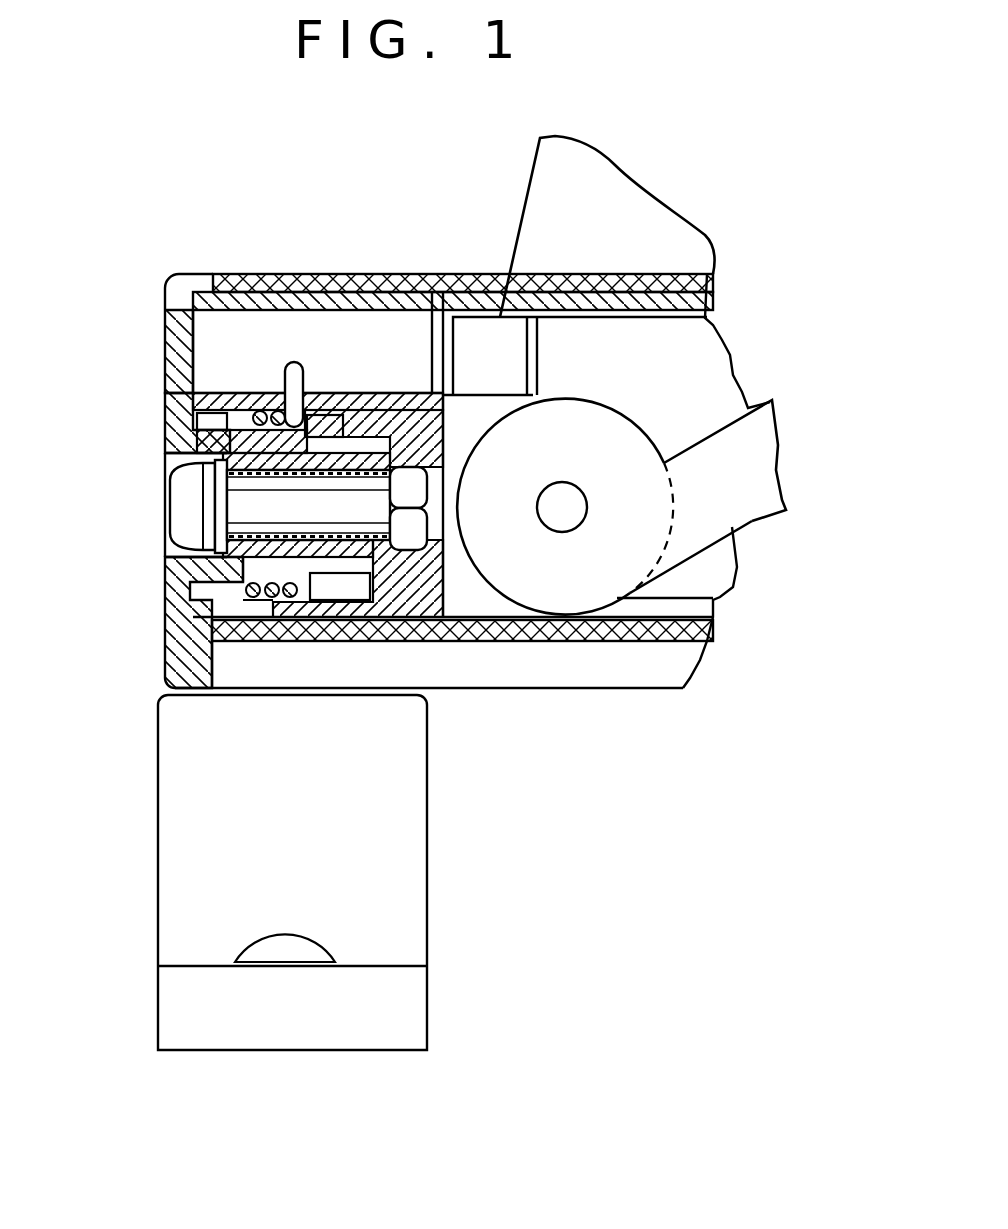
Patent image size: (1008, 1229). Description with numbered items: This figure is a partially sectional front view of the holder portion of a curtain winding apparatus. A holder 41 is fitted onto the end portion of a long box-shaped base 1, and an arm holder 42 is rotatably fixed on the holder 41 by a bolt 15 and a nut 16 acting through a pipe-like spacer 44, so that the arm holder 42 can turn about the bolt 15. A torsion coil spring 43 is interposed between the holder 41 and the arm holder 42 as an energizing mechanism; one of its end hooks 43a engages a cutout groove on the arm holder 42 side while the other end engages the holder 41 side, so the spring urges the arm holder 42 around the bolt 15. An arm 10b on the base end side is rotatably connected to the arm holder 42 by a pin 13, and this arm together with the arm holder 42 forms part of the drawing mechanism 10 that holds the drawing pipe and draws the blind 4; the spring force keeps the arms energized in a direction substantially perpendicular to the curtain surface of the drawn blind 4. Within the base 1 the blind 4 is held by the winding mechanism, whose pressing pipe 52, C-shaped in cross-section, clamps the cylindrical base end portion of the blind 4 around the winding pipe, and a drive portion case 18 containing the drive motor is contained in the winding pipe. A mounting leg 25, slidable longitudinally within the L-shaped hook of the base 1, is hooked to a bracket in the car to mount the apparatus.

The base 1 is at (240, 273).
The blind 4 is at (533, 165).
The drawing mechanism 10 is at (737, 413).
The arm 10b is at (737, 500).
The pin 13 is at (567, 512).
The bolt 15 is at (178, 533).
The nut 16 is at (413, 537).
The drive portion case 18 is at (476, 314).
The mounting leg 25 is at (158, 880).
The holder 41 is at (164, 364).
The arm holder 42 is at (404, 378).
The torsion coil spring 43 is at (235, 415).
The hook 43a is at (283, 362).
The pipe-like spacer 44 is at (345, 400).
The pressing pipe 52 is at (658, 312).